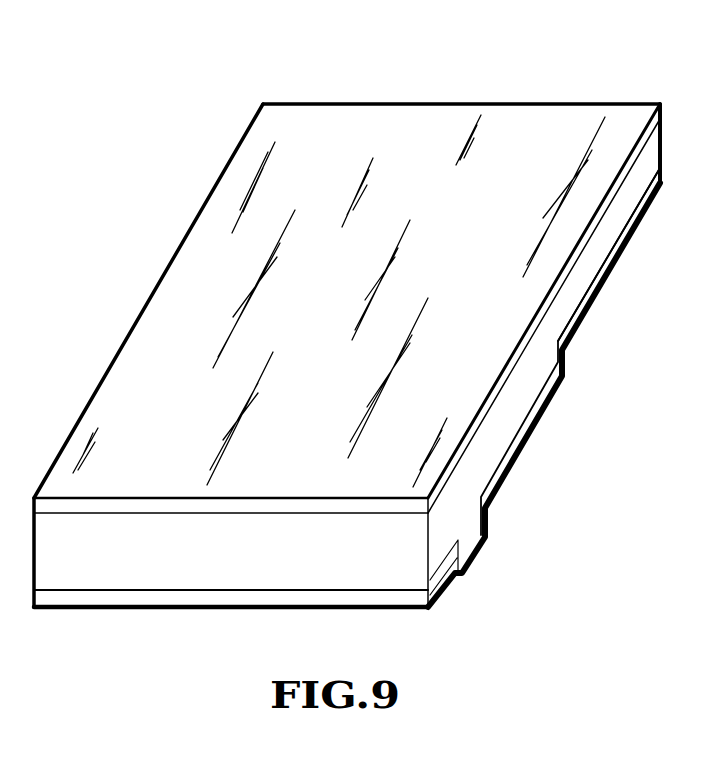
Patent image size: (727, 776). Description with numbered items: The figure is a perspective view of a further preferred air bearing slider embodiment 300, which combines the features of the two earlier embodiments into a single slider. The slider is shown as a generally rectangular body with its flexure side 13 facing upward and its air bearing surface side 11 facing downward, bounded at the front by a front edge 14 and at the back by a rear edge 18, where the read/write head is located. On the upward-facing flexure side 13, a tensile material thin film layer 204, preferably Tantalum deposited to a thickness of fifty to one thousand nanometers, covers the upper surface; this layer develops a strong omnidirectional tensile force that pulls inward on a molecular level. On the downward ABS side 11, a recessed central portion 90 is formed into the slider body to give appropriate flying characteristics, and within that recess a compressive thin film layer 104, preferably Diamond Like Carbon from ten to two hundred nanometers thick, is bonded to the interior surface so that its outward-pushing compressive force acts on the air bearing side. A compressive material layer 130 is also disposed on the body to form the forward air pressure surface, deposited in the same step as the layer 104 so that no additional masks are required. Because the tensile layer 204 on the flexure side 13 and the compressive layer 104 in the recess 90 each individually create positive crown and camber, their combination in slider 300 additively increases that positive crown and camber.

The slider embodiment 300 is at (160, 84).
The rear edge 18 is at (500, 104).
The flexure side 13 is at (103, 400).
The tensile material thin film layer 204 is at (344, 354).
The front edge 14 is at (237, 577).
The compressive material layer 130 is at (123, 598).
The air bearing surface side 11 is at (565, 425).
The compressive thin film layer 104 is at (630, 232).
The recessed central portion 90 is at (603, 318).